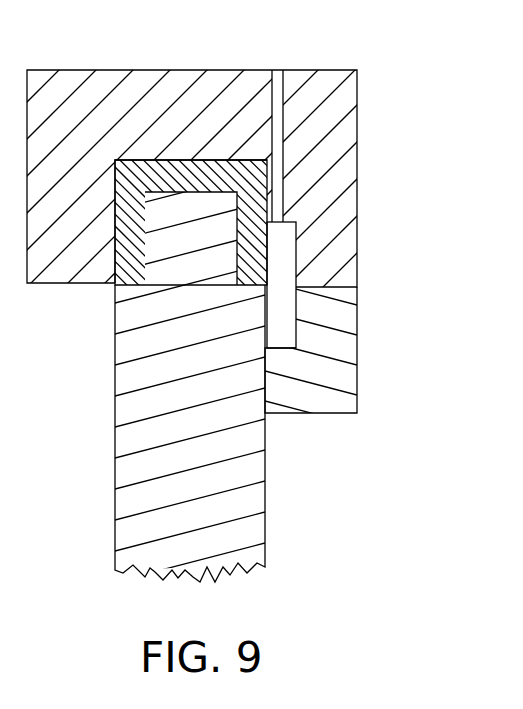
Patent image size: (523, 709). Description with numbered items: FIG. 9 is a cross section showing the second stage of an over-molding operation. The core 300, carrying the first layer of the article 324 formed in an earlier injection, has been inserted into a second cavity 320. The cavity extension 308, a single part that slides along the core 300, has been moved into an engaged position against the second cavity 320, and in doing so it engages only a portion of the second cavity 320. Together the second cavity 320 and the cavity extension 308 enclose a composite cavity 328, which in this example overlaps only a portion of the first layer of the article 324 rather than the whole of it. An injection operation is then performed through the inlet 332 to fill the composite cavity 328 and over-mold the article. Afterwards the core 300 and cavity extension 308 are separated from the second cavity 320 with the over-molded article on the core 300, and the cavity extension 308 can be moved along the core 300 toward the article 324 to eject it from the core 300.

The core 300 is at (265, 541).
The cavity extension 308 is at (357, 370).
The second cavity 320 is at (357, 134).
The first layer of the article 324 is at (117, 265).
The composite cavity 328 is at (282, 257).
The inlet 332 is at (279, 78).